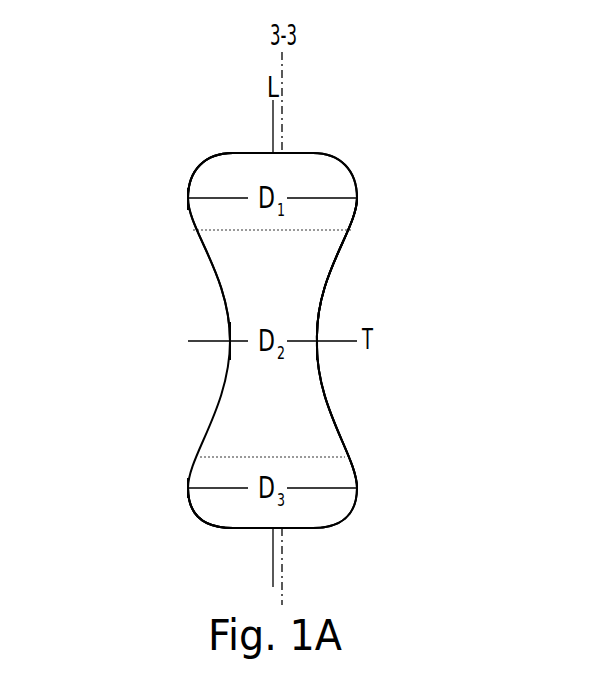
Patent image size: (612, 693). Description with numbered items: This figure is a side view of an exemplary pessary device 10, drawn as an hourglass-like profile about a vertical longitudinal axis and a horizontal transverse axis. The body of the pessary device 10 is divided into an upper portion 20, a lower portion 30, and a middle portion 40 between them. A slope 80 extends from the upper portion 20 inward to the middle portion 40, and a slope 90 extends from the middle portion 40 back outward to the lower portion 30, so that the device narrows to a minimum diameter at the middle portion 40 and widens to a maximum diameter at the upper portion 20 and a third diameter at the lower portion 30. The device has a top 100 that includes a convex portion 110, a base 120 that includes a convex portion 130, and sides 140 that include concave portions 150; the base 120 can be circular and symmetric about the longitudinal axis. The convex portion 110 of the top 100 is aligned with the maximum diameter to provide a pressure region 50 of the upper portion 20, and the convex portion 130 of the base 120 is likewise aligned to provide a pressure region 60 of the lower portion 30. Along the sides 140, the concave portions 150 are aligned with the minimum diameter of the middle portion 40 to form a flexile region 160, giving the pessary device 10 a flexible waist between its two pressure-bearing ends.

The pessary device 10 is at (128, 108).
The upper portion 20 is at (357, 180).
The lower portion 30 is at (356, 500).
The middle portion 40 is at (318, 330).
The pressure region 50 is at (358, 198).
The pressure region 60 is at (358, 487).
The slope 80 is at (342, 255).
The slope 90 is at (340, 430).
The top 100 is at (191, 183).
The convex portion 110 is at (189, 198).
The base 120 is at (203, 518).
The convex portion 130 is at (189, 487).
The sides 140 is at (218, 278).
The concave portions 150 is at (229, 350).
The flexile region 160 is at (229, 330).